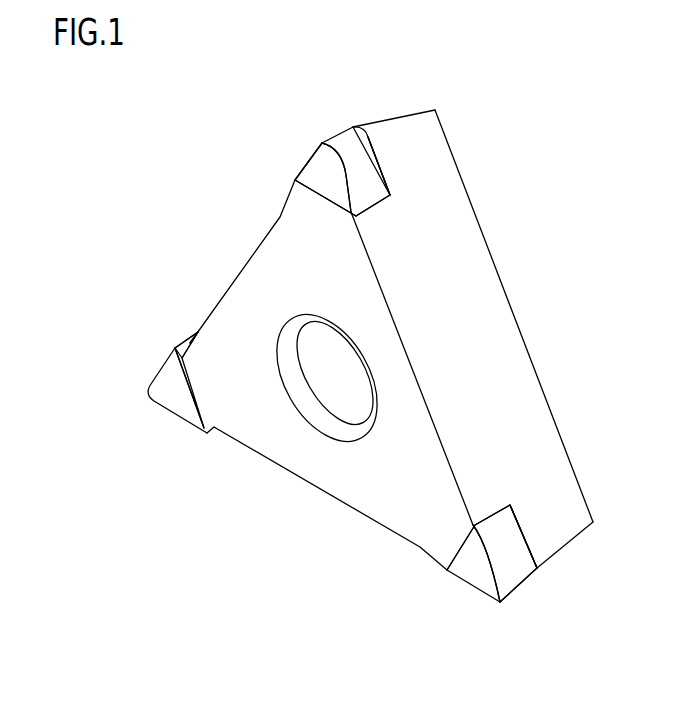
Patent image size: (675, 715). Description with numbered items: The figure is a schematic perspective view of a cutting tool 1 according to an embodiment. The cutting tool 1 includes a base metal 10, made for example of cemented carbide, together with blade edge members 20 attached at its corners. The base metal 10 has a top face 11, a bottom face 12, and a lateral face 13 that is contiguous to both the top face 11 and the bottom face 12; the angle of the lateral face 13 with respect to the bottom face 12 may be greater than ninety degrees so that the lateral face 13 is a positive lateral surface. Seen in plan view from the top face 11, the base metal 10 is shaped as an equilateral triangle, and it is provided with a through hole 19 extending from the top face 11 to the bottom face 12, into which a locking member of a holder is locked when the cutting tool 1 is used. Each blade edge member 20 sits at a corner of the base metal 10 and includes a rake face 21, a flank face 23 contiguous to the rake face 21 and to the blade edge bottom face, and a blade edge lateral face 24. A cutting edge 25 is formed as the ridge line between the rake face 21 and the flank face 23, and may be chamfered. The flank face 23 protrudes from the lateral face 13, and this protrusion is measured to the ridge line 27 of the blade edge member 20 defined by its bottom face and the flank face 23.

The cutting tool 1 is at (529, 121).
The base metal 10 is at (607, 333).
The top face 11 is at (417, 422).
The bottom face 12 is at (525, 345).
The lateral face 13 is at (502, 380).
The through hole 19 is at (298, 410).
The blade edge member 20 is at (285, 79).
The rake face 21 is at (313, 168).
The flank face 23 is at (362, 160).
The blade edge lateral face 24 is at (178, 350).
The cutting edge 25 is at (345, 168).
The ridge line 27 is at (382, 172).